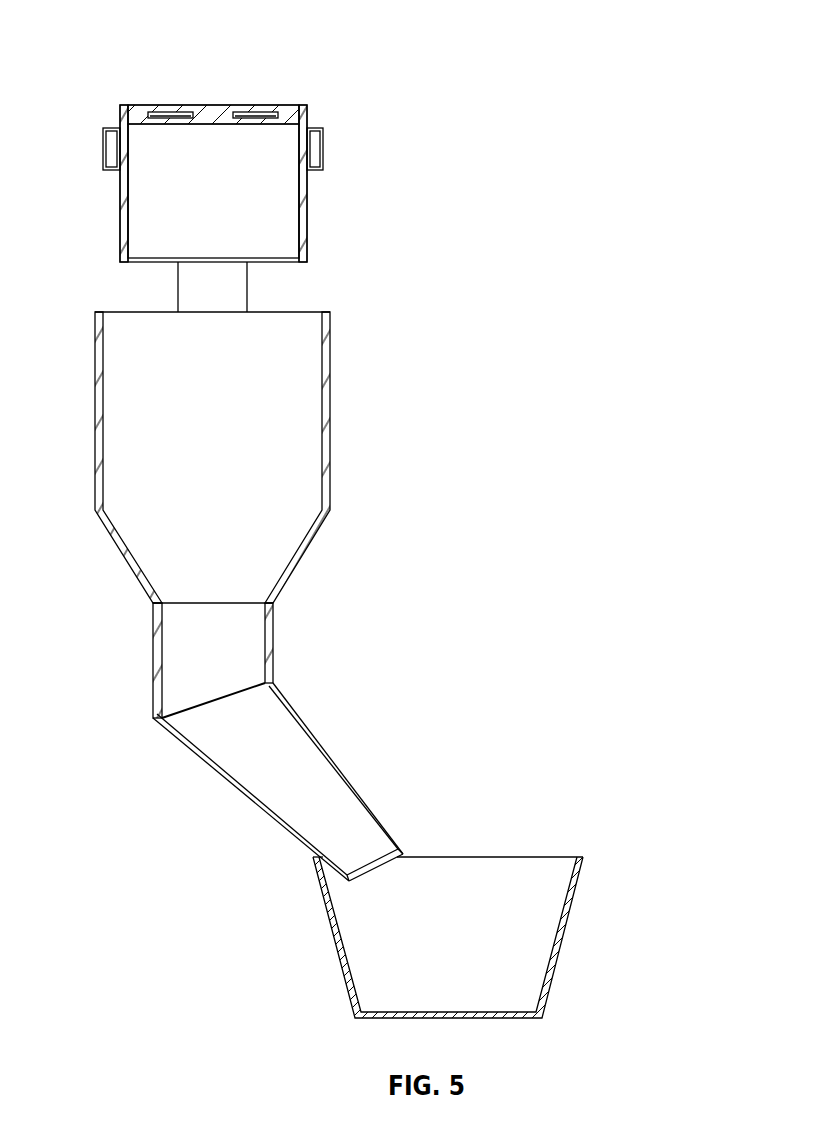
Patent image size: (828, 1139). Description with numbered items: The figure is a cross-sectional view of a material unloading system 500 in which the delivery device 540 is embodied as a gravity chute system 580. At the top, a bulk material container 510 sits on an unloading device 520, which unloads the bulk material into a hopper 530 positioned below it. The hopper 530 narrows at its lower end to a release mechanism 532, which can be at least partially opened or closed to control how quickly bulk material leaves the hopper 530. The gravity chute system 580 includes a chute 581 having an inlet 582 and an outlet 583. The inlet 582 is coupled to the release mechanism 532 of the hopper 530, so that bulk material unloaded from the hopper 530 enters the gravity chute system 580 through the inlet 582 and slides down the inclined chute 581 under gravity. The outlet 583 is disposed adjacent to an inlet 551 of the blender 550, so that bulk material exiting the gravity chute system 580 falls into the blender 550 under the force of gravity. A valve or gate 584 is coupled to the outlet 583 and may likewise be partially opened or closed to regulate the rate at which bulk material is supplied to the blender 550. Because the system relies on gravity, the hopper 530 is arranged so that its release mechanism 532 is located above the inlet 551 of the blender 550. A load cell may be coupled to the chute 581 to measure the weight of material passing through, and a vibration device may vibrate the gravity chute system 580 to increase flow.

The material unloading system 500 is at (362, 39).
The bulk material container 510 is at (309, 124).
The unloading device 520 is at (248, 276).
The hopper 530 is at (331, 362).
The release mechanism 532 is at (150, 620).
The delivery device 540 is at (412, 664).
The blender 550 is at (590, 947).
The inlet of the blender 551 is at (546, 857).
The gravity chute system 580 is at (359, 756).
The chute 581 is at (292, 708).
The inlet 582 is at (222, 695).
The outlet 583 is at (404, 840).
The valve or gate 584 is at (402, 856).